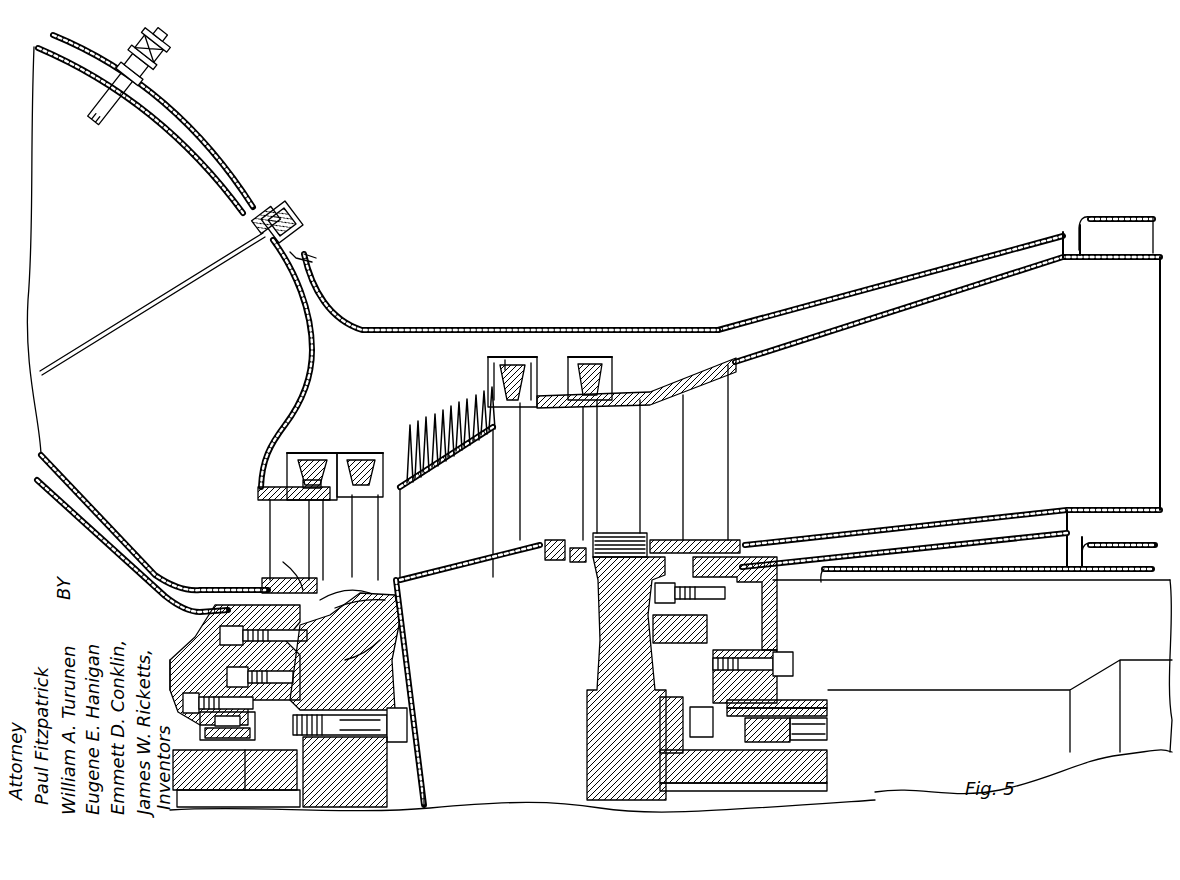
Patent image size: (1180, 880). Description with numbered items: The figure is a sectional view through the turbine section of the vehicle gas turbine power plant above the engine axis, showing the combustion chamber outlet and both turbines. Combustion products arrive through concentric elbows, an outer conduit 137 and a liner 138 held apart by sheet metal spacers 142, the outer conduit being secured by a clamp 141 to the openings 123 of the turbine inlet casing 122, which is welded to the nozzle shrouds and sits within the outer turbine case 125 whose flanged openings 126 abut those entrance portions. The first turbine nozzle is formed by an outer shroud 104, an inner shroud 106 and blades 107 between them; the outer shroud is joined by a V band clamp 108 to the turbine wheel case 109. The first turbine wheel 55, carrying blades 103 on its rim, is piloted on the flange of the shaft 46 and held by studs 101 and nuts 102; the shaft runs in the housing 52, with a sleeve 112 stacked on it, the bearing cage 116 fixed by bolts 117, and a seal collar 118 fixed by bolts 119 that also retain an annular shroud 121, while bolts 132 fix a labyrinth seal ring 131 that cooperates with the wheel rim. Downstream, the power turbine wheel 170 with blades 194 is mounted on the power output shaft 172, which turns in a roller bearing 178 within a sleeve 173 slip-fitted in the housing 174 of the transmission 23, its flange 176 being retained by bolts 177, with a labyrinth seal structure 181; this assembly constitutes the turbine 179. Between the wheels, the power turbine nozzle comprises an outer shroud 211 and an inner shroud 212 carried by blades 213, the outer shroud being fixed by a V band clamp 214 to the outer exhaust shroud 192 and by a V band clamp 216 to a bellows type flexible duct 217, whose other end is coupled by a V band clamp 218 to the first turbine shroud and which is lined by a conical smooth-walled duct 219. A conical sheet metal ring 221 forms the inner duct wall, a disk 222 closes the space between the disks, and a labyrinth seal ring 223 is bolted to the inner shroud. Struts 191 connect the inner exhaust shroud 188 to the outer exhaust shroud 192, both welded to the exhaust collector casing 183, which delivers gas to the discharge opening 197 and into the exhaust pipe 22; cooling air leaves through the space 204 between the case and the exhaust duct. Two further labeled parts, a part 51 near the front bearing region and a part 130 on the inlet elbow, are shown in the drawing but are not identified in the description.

The exhaust pipe 22 is at (1112, 218).
The transmission 23 is at (946, 592).
The shaft 46 is at (375, 750).
The bearing support 51 is at (259, 772).
The housing 52 is at (165, 640).
The first turbine wheel 55 is at (352, 676).
The studs 101 is at (406, 724).
The nuts 102 is at (406, 692).
The blades 103 is at (348, 543).
The outer shroud 104 is at (266, 498).
The inner shroud 106 is at (268, 585).
The blades 107 is at (275, 540).
The V band clamp 108 is at (308, 445).
The turbine wheel case 109 is at (326, 455).
The sleeve 112 is at (236, 778).
The cage 116 is at (192, 712).
The bolts 117 is at (178, 652).
The seal collar 118 is at (232, 668).
The bolts 119 is at (350, 658).
The annular shroud 121 is at (352, 600).
The turbine inlet casing 122 is at (313, 367).
The openings 123 is at (135, 328).
The outer turbine case 125 is at (962, 548).
The flanged openings 126 is at (303, 262).
The fitting 130 is at (160, 70).
The labyrinth seal ring 131 is at (300, 580).
The bolts 132 is at (335, 633).
The outer conduit 137 is at (186, 118).
The liner 138 is at (166, 140).
The clamp 141 is at (290, 214).
The sheet metal spacers 142 is at (248, 204).
The power turbine wheel 170 is at (587, 745).
The power output shaft 172 is at (812, 762).
The sleeve 173 is at (812, 710).
The housing 174 is at (796, 690).
The flange 176 is at (738, 648).
The bolts 177 is at (790, 660).
The roller bearing 178 is at (812, 733).
The turbine 179 is at (1097, 762).
The labyrinth seal structure 181 is at (690, 672).
The exhaust collector casing 183 is at (882, 318).
The inner exhaust shroud 188 is at (722, 540).
The struts 191 is at (718, 470).
The outer exhaust shroud 192 is at (667, 373).
The blades 194 is at (626, 480).
The discharge opening 197 is at (1158, 380).
The space 204 is at (1068, 240).
The outer shroud 211 is at (548, 392).
The inner shroud 212 is at (540, 560).
The blades 213 is at (566, 478).
The V band clamp 214 is at (592, 357).
The V band clamp 216 is at (505, 360).
The bellows type flexible duct 217 is at (442, 402).
The V band clamp 218 is at (370, 443).
The conical smooth-walled duct 219 is at (426, 475).
The conical sheet metal ring 221 is at (460, 568).
The disk 222 is at (420, 782).
The labyrinth seal ring 223 is at (578, 565).